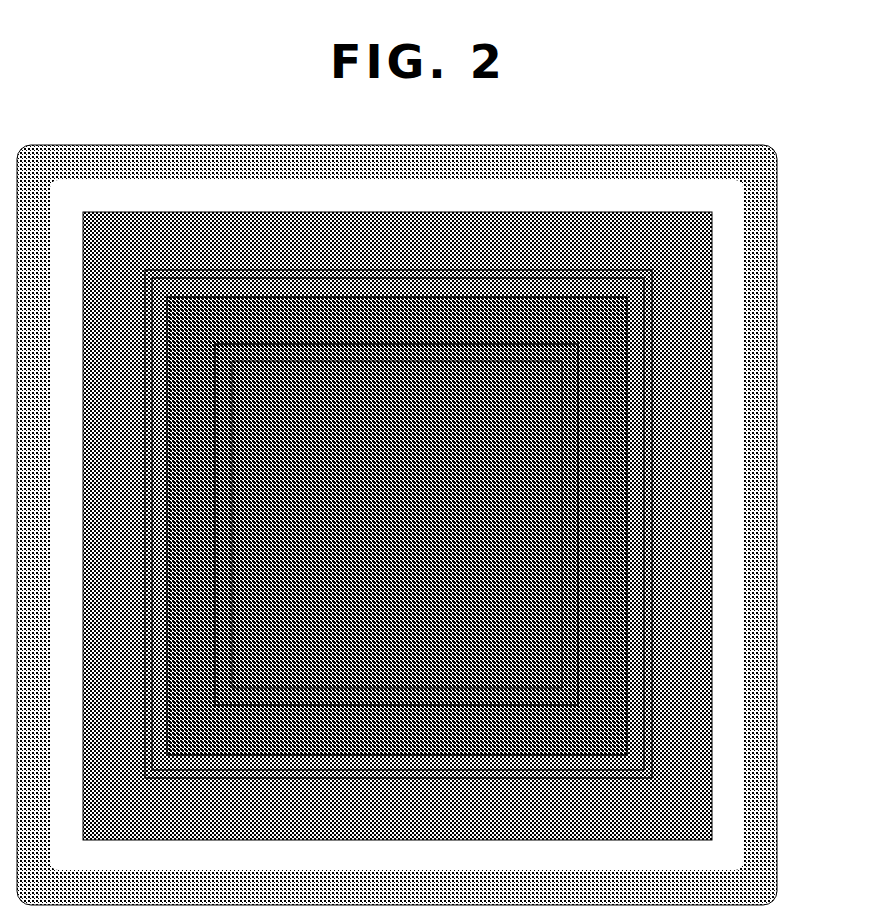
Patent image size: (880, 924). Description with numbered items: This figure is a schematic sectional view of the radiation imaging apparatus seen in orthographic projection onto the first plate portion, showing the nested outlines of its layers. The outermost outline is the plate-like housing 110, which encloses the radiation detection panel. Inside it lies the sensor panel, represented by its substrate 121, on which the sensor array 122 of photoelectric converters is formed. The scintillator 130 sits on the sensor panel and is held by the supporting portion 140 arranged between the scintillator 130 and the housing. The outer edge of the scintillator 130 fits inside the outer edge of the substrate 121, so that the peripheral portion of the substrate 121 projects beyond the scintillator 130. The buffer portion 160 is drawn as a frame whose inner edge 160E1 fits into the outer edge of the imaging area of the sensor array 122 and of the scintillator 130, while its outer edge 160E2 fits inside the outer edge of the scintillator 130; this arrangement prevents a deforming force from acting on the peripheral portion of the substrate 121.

The housing 110 is at (772, 257).
The substrate 121 is at (698, 440).
The sensor array 122 is at (560, 652).
The scintillator 130 is at (645, 485).
The supporting portion 140 is at (652, 518).
The buffer portion 160 is at (610, 595).
The inner edge of the buffer portion 160E1 is at (570, 422).
The outer edge of the buffer portion 160E2 is at (636, 341).